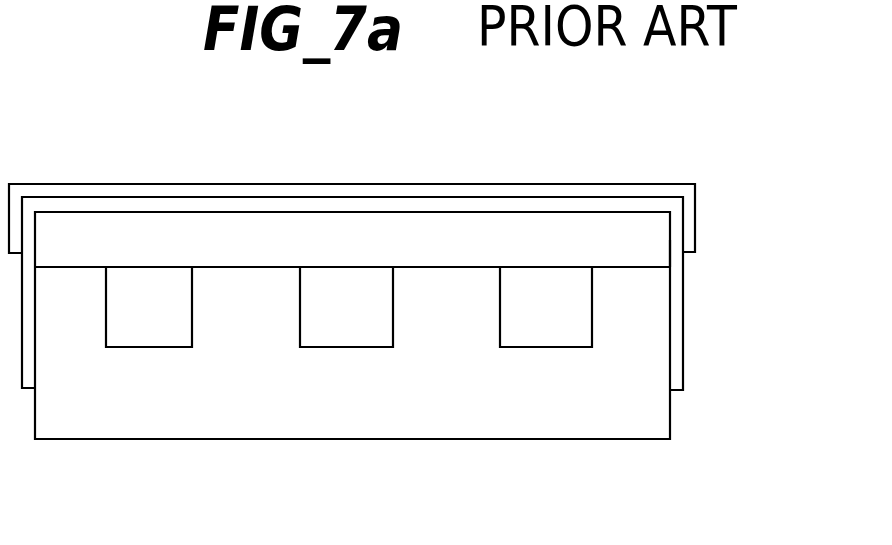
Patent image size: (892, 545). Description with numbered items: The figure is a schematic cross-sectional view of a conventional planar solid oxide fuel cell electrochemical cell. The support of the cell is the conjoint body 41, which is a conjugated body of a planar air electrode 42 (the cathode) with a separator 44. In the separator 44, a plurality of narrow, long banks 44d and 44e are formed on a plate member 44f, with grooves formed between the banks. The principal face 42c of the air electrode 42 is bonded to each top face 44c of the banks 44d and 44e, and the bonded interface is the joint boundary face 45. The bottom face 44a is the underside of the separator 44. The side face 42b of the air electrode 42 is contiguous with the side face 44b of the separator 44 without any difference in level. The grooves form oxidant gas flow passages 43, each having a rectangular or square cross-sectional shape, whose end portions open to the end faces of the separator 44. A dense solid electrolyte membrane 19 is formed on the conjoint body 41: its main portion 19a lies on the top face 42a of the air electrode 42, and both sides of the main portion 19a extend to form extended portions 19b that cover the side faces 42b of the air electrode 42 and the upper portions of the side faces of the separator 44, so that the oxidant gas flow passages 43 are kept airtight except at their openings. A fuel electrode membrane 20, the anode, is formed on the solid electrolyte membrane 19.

The solid electrolyte membrane 19 is at (378, 202).
The main portion 19a is at (291, 203).
The extended portions 19b is at (677, 320).
The fuel electrode membrane 20 is at (495, 192).
The conjoint body 41 is at (673, 225).
The air electrode 42 is at (622, 232).
The top face 42a is at (548, 210).
The side face 42b is at (671, 256).
The principal face 42c is at (625, 268).
The oxidant gas flow passage 43 is at (162, 324).
The separator 44 is at (670, 417).
The bottom face 44a is at (438, 441).
The side face 44b is at (671, 368).
The top face 44c is at (243, 268).
The bank 44d is at (82, 293).
The bank 44e is at (435, 287).
The plate member 44f is at (338, 415).
The joint boundary face 45 is at (62, 268).